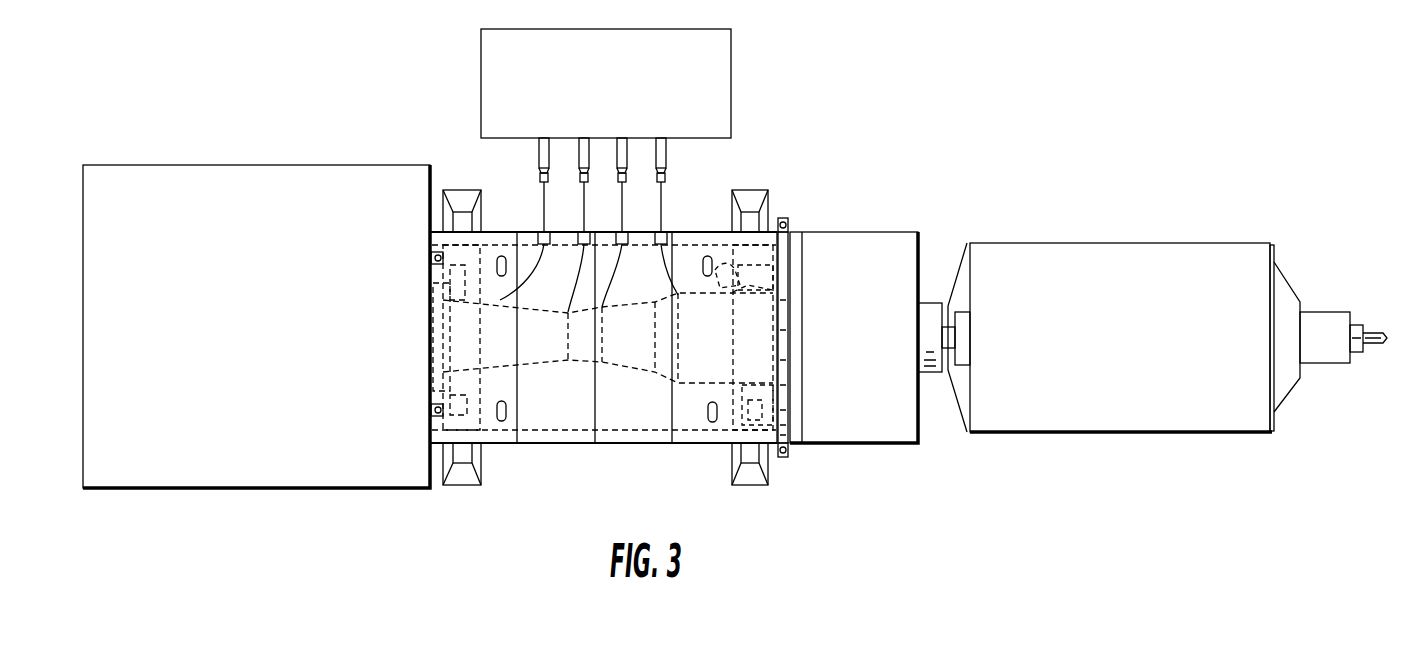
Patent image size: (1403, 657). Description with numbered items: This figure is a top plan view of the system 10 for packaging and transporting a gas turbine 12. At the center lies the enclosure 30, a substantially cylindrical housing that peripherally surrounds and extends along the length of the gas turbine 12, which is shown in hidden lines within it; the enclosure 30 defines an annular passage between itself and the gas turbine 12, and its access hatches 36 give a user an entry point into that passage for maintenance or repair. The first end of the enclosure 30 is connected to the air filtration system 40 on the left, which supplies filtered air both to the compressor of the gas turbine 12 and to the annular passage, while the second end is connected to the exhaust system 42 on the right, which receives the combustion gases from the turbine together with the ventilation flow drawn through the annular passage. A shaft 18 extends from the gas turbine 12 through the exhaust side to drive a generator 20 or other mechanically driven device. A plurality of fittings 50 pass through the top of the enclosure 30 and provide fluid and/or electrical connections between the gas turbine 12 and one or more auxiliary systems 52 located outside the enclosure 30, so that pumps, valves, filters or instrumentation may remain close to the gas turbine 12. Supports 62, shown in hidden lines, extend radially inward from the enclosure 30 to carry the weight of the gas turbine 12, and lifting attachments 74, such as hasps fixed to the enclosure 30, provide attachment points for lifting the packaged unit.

The system 10 is at (530, 465).
The gas turbine 12 is at (586, 367).
The shaft 18 is at (932, 303).
The generator 20 is at (1129, 353).
The enclosure 30 is at (605, 447).
The access hatches 36 is at (597, 403).
The air filtration system 40 is at (284, 328).
The exhaust system 42 is at (868, 352).
The fittings 50 is at (544, 232).
The auxiliary systems 52 is at (623, 98).
The supports 62 is at (758, 280).
The lifting attachment 74 is at (497, 411).